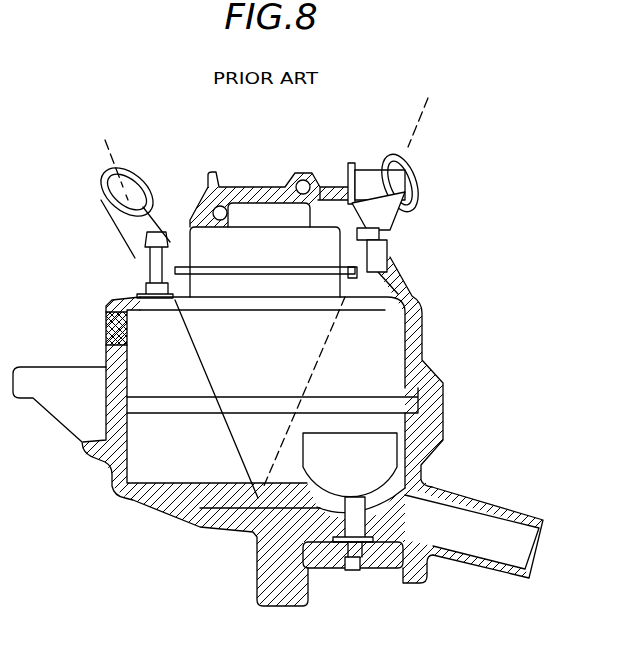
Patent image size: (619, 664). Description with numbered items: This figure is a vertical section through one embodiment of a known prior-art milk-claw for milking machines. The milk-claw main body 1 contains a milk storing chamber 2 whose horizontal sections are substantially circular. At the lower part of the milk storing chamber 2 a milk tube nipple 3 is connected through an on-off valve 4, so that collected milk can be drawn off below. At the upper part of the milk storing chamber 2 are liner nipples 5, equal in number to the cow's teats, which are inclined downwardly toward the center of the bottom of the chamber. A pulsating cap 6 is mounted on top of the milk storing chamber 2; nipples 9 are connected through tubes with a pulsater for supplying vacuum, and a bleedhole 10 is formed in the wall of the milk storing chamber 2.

The milk-claw main body 1 is at (430, 325).
The milk storing chamber 2 is at (314, 355).
The milk tube nipple 3 is at (478, 498).
The on-off valve 4 is at (303, 448).
The liner nipples 5 is at (108, 196).
The pulsating cap 6 is at (232, 186).
The nipples 9 is at (372, 170).
The bleedhole 10 is at (106, 325).